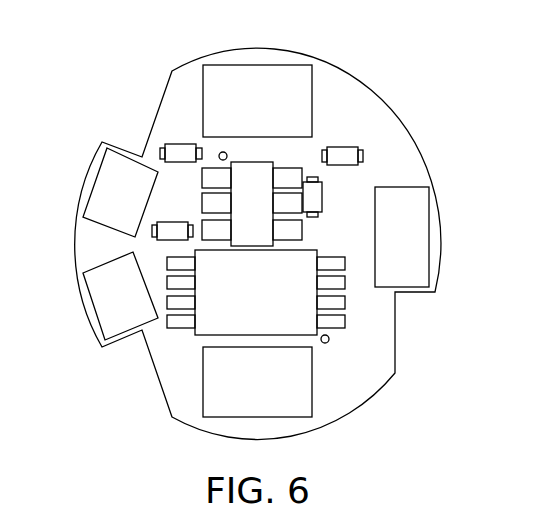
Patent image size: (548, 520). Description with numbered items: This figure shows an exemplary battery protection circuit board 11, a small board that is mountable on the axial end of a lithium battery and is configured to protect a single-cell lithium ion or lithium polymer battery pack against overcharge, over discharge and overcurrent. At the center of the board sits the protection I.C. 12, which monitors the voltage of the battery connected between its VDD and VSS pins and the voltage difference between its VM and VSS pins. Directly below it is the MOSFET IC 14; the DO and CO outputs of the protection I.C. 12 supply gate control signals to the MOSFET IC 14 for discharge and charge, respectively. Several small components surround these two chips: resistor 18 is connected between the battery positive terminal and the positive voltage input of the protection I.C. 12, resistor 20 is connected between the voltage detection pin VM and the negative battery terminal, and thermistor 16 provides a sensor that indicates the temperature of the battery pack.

The battery protection circuit board 11 is at (378, 63).
The protection I.C. 12 is at (264, 213).
The MOSFET IC 14 is at (268, 301).
The thermistor 16 is at (163, 148).
The resistor 18 is at (348, 152).
The resistor 20 is at (152, 233).